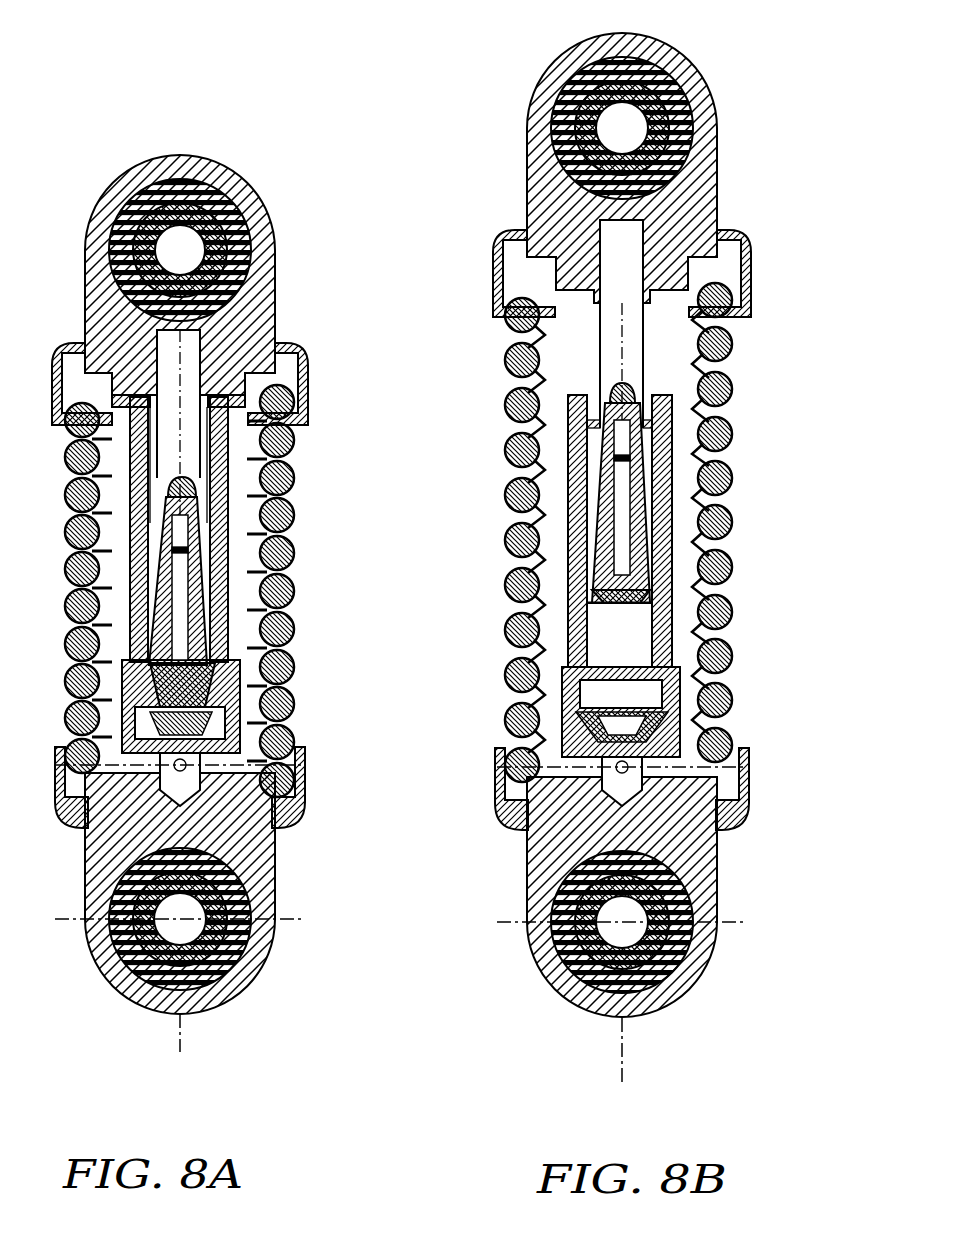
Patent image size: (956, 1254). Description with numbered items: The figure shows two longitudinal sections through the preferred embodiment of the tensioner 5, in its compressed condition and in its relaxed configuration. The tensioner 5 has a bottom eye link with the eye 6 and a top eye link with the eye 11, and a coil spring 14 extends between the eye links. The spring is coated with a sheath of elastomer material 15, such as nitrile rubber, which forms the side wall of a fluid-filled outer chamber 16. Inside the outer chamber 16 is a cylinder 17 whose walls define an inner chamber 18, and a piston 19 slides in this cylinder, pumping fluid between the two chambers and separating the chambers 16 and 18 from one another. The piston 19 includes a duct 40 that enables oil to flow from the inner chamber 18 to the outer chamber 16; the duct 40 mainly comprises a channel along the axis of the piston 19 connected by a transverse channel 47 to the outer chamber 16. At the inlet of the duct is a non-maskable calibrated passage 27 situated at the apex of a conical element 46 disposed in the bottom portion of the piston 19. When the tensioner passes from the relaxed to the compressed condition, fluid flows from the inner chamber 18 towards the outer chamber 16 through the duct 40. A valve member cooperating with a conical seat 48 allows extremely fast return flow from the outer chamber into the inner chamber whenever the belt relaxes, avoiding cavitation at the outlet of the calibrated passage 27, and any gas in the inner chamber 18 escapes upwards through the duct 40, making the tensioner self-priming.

In FIG. 8A, the tensioner 5 is at (304, 291).
In FIG. 8B, the tensioner 5 is at (762, 168).
In FIG. 8A, the eye 6 is at (230, 958).
In FIG. 8B, the eye 6 is at (670, 963).
In FIG. 8A, the eye 11 is at (184, 250).
In FIG. 8B, the eye 11 is at (630, 127).
In FIG. 8A, the coil spring 14 is at (293, 516).
In FIG. 8B, the coil spring 14 is at (733, 445).
In FIG. 8B, the sheath of elastomer material 15 is at (728, 546).
In FIG. 8A, the outer chamber 16 is at (293, 443).
In FIG. 8B, the outer chamber 16 is at (690, 627).
In FIG. 8B, the cylinder 17 is at (568, 485).
In FIG. 8B, the inner chamber 18 is at (618, 664).
In FIG. 8A, the piston 19 is at (210, 590).
In FIG. 8B, the piston 19 is at (568, 548).
In FIG. 8A, the calibrated passage 27 is at (226, 700).
In FIG. 8B, the calibrated passage 27 is at (682, 603).
In FIG. 8A, the duct 40 is at (196, 628).
In FIG. 8B, the conical element 46 is at (580, 612).
In FIG. 8B, the transverse channel 47 is at (640, 400).
In FIG. 8B, the conical seat 48 is at (682, 730).